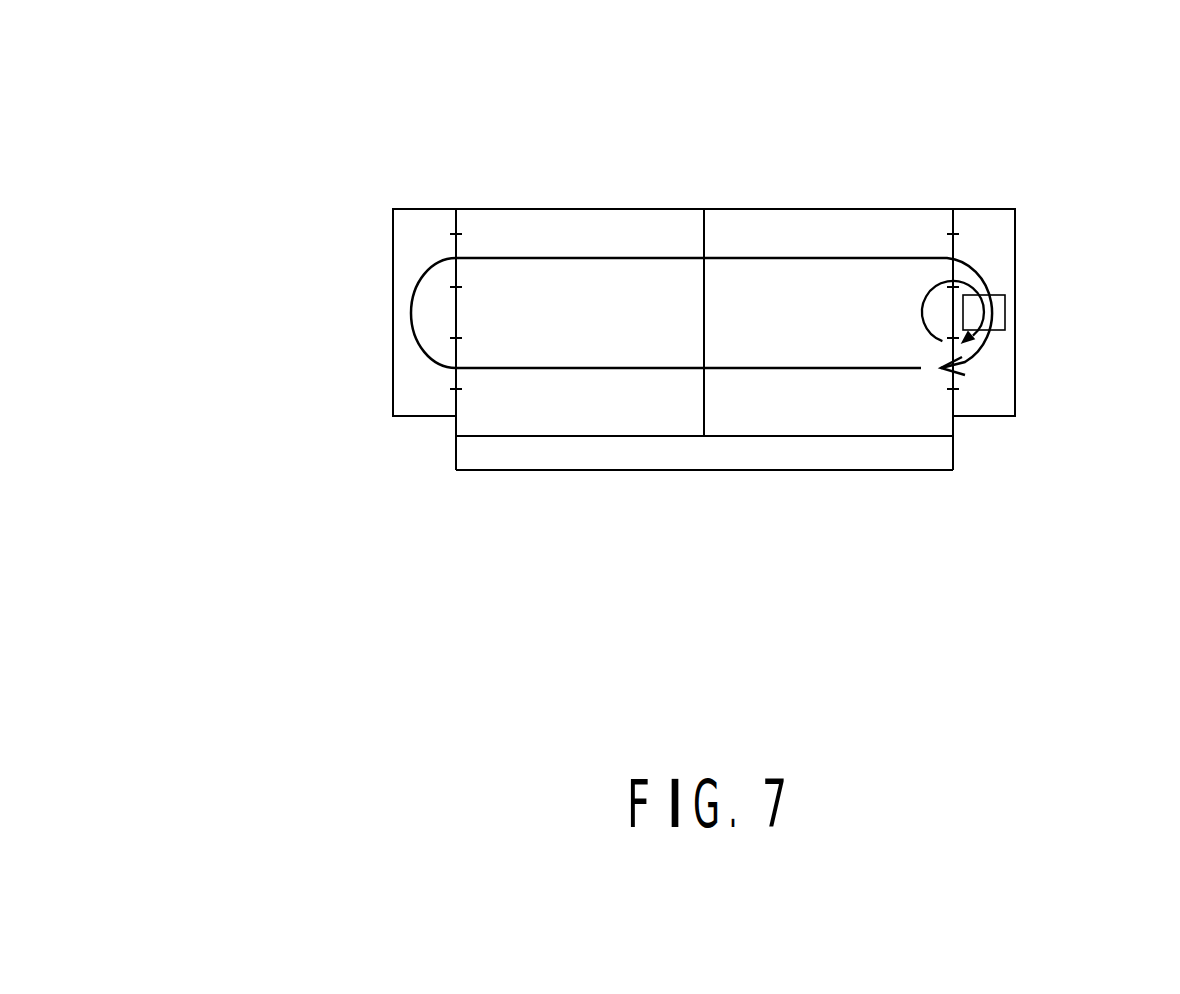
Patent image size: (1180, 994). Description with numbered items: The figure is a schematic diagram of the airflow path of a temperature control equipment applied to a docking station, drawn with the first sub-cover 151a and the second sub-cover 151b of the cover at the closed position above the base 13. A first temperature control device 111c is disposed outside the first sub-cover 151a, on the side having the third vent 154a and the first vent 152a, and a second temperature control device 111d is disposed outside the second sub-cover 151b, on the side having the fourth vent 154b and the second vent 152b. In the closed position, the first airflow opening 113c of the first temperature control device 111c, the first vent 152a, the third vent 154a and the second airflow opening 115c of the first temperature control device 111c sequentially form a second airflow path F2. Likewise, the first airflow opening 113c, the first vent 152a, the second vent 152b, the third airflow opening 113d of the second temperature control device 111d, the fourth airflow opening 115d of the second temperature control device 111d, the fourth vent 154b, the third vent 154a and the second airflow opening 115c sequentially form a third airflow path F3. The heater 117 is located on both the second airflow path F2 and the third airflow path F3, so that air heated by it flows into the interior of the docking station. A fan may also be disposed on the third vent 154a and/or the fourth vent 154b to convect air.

The first temperature control device 111c is at (1016, 345).
The second temperature control device 111d is at (392, 340).
The first airflow opening 113c is at (965, 378).
The third airflow opening 113d is at (446, 380).
The second airflow opening 115c is at (962, 248).
The fourth airflow opening 115d is at (455, 243).
The heater 117 is at (1006, 312).
The base 13 is at (733, 453).
The first sub-cover 151a is at (952, 422).
The second sub-cover 151b is at (458, 426).
The first vent 152a is at (943, 378).
The second vent 152b is at (469, 378).
The third vent 154a is at (944, 248).
The fourth vent 154b is at (465, 247).
The second airflow path F2 is at (921, 306).
The third airflow path F3 is at (808, 256).